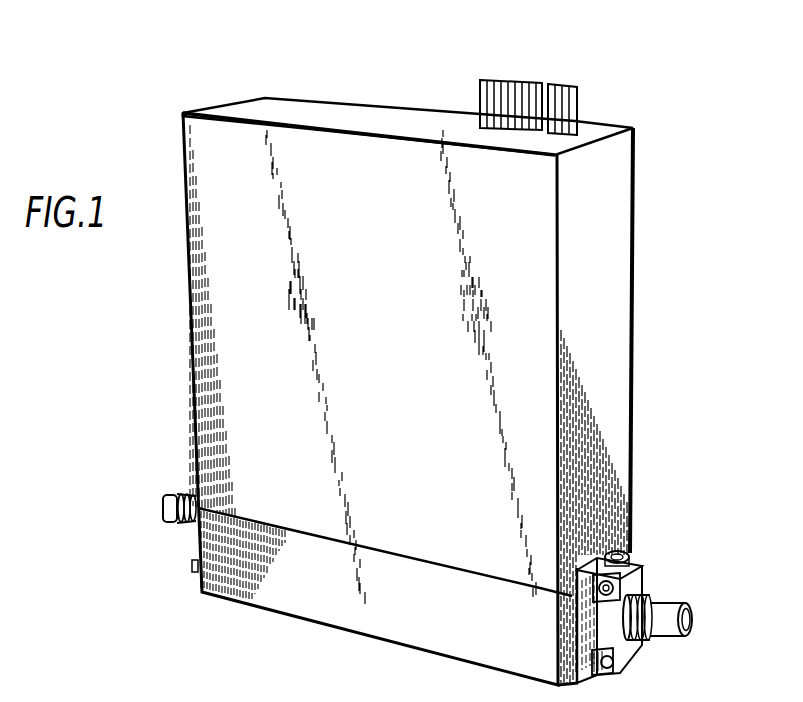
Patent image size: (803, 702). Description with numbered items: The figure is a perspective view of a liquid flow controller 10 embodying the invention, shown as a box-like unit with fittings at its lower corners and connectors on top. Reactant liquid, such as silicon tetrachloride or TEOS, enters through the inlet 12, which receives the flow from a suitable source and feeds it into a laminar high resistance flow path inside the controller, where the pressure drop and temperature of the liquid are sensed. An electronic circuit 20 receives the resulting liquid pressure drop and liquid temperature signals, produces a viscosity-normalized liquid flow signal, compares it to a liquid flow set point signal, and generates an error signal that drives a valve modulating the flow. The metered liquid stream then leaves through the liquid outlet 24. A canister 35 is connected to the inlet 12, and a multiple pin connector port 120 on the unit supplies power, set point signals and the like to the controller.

The liquid flow controller 10 is at (423, 347).
The inlet 12 is at (640, 585).
The electronic circuit 20 is at (565, 86).
The liquid outlet 24 is at (168, 504).
The canister 35 is at (303, 117).
The multiple pin connector port 120 is at (503, 80).